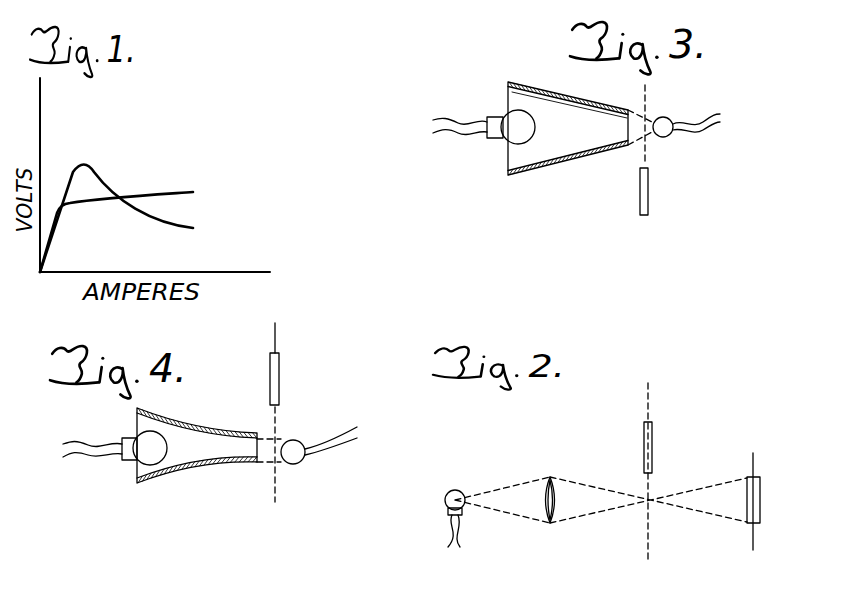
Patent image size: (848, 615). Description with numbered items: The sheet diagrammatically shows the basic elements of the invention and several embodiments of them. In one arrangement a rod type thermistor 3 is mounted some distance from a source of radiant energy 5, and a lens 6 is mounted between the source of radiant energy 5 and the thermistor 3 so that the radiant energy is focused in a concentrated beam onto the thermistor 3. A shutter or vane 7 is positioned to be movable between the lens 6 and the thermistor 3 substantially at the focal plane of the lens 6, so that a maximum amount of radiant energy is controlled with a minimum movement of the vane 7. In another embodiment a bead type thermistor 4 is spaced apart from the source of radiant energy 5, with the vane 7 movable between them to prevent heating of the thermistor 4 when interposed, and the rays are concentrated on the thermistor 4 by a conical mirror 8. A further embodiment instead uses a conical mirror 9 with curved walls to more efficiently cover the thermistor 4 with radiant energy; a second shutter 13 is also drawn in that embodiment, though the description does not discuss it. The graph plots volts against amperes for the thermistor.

In FIG. 2, the rod type thermistor 3 is at (745, 482).
In FIG. 3, the bead type thermistor 4 is at (666, 137).
In FIG. 4, the bead type thermistor 4 is at (297, 464).
In FIG. 3, the source of radiant energy 5 is at (507, 120).
In FIG. 4, the source of radiant energy 5 is at (142, 456).
In FIG. 2, the source of radiant energy 5 is at (455, 490).
In FIG. 2, the lens 6 is at (557, 485).
In FIG. 3, the shutter or vane 7 is at (640, 190).
In FIG. 2, the shutter or vane 7 is at (653, 455).
In FIG. 3, the conical mirror 8 is at (553, 168).
In FIG. 4, the conical mirror with curved walls 9 is at (187, 478).
In FIG. 4, the shutter 13 is at (270, 382).